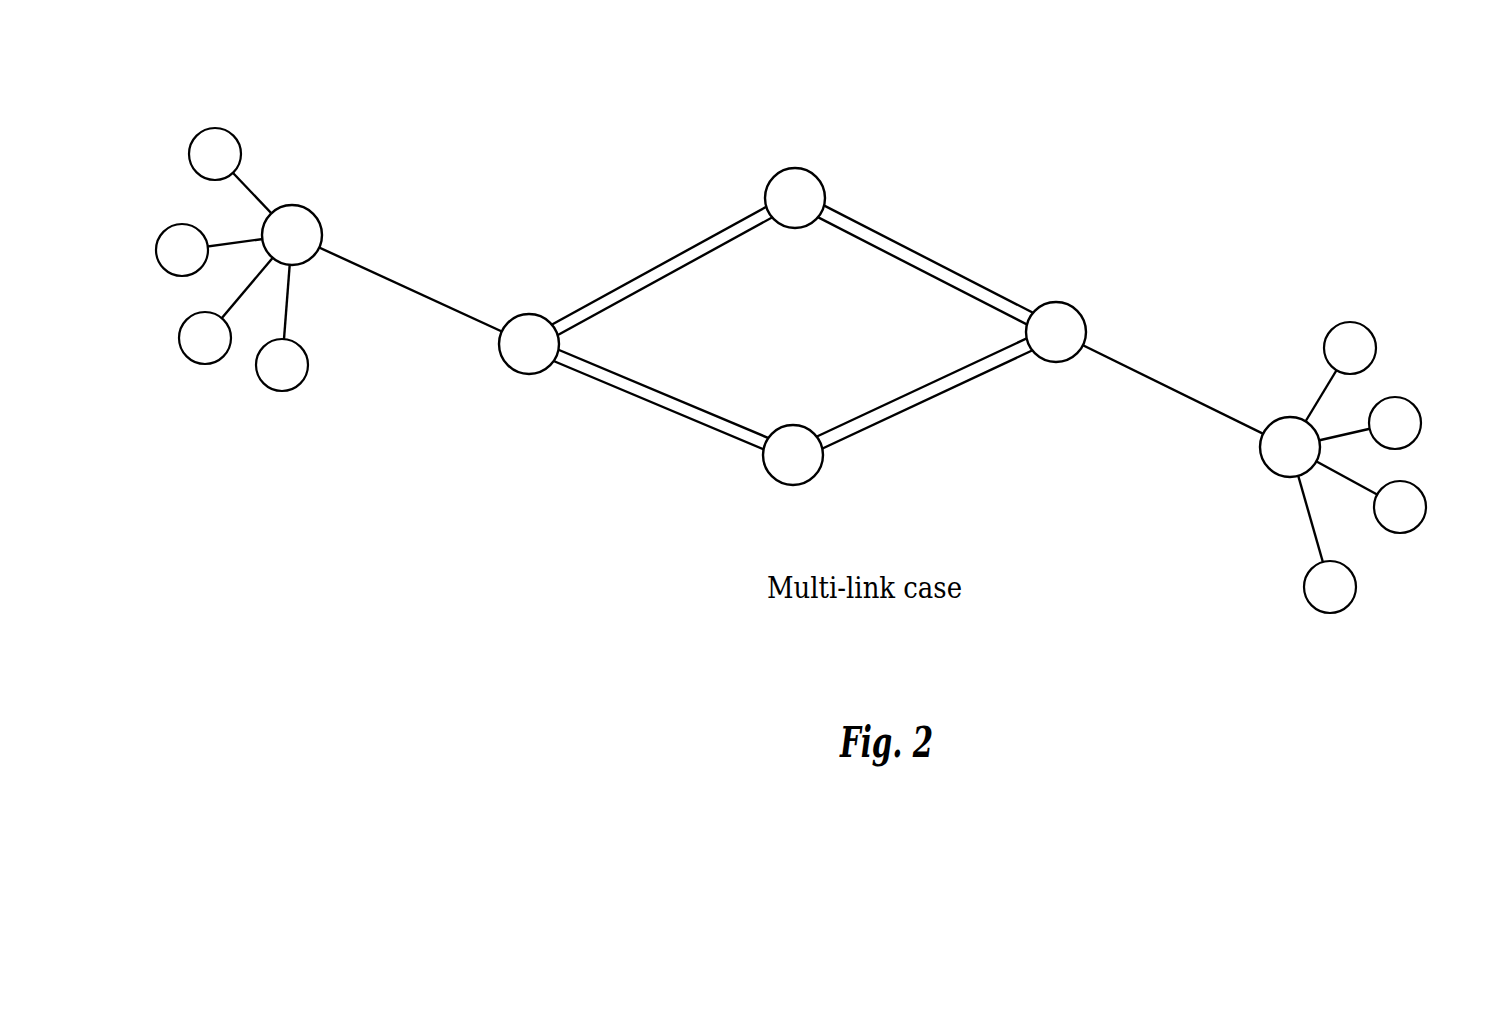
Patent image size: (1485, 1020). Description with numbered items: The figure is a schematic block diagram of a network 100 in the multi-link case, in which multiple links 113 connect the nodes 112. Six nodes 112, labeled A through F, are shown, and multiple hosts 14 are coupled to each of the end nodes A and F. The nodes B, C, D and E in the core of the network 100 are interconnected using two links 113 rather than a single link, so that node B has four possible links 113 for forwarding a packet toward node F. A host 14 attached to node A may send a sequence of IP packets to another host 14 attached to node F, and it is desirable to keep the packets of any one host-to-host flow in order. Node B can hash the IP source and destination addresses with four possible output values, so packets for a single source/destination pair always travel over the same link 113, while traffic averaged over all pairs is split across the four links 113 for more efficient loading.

The network 100 is at (784, 324).
The node 112 is at (292, 204).
The link 113 is at (392, 278).
The host 14 is at (188, 156).